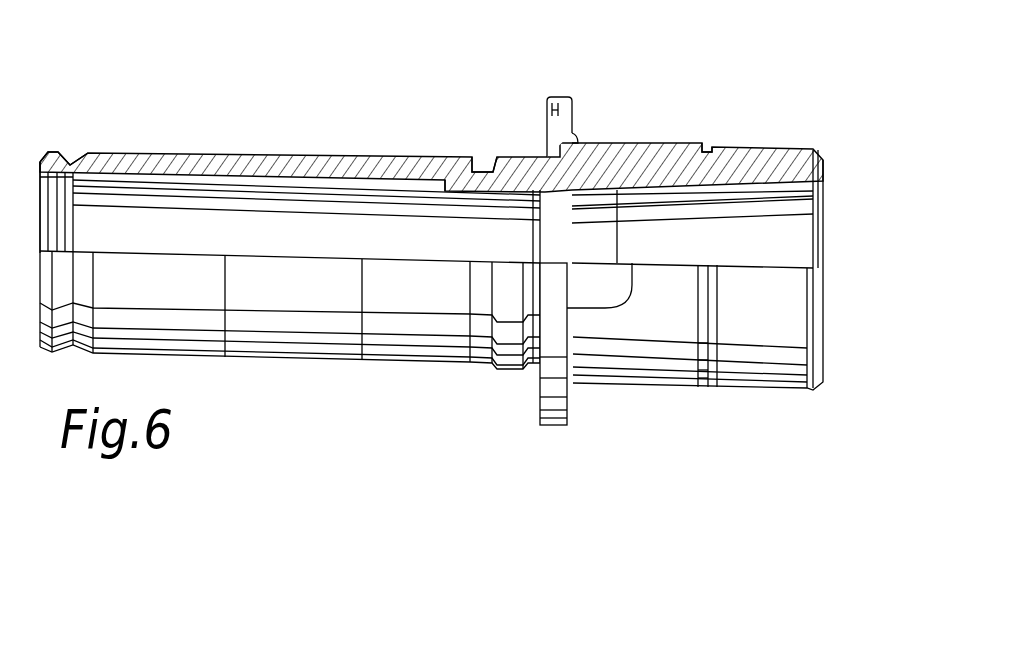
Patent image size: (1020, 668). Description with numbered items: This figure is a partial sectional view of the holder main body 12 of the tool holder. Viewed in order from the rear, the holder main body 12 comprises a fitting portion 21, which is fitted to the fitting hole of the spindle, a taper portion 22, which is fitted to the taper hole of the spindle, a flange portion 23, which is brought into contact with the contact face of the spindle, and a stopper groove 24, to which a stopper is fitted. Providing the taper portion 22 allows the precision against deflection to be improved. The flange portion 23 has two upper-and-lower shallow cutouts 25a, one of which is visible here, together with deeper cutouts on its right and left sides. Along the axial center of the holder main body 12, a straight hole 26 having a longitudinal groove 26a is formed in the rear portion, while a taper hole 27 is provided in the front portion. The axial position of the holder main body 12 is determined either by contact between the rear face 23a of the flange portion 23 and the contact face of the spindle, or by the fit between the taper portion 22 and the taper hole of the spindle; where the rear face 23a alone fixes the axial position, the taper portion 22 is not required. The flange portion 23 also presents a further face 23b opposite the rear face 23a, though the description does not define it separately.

The holder main body 12 is at (390, 150).
The fitting portion 21 is at (184, 153).
The taper portion 22 is at (512, 156).
The flange portion 23 is at (560, 97).
The rear face of the flange portion 23a is at (539, 410).
The pin lower right portion 23b is at (567, 410).
The stopper groove 24 is at (707, 143).
The shallow cutout 25a is at (565, 122).
The straight hole 26 is at (300, 188).
The longitudinal groove 26a is at (137, 153).
The taper hole 27 is at (768, 190).